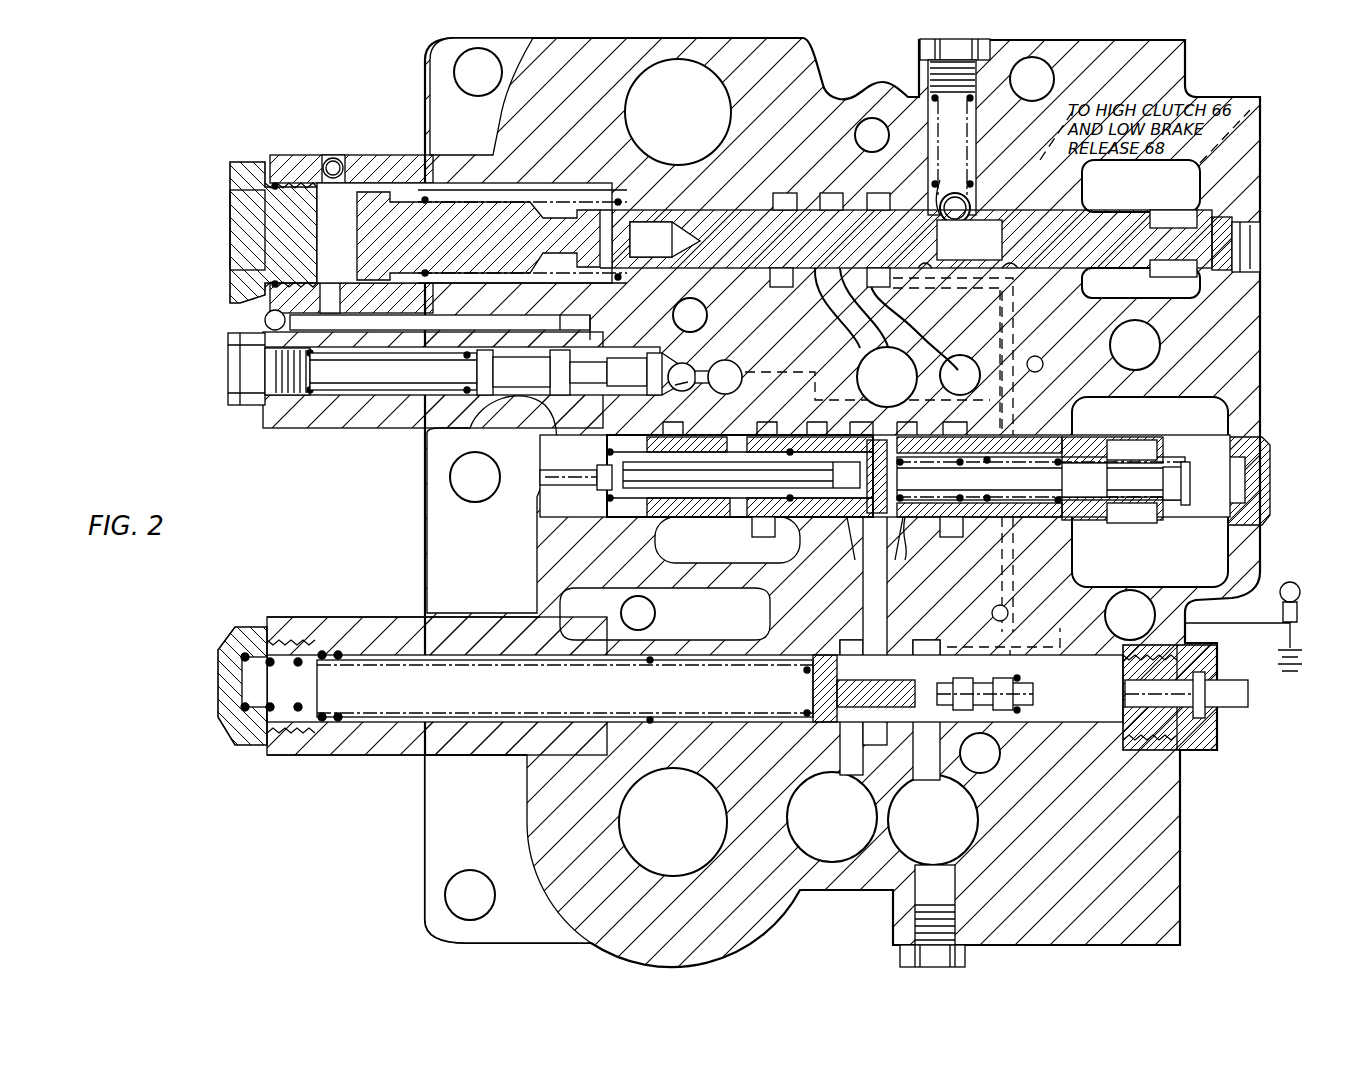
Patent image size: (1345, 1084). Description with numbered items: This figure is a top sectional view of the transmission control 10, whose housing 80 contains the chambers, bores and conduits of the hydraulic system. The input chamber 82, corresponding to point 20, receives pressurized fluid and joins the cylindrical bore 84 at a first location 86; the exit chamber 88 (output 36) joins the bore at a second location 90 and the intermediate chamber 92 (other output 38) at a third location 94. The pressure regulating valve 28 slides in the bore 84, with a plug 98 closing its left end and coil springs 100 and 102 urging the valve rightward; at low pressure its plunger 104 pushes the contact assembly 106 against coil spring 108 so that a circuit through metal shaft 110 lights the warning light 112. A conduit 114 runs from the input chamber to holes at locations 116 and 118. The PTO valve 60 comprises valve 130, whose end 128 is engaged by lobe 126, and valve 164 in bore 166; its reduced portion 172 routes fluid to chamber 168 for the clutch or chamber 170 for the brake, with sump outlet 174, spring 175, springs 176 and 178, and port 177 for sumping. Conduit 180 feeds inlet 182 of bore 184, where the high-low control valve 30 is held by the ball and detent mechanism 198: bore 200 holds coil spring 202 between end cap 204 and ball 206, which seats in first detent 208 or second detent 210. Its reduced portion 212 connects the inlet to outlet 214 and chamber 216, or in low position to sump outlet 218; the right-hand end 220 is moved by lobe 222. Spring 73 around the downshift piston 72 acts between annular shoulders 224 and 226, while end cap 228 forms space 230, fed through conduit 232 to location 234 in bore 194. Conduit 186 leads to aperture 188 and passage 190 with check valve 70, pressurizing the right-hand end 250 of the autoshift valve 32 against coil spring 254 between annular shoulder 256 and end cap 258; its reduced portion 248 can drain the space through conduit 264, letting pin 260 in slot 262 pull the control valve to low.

The transmission control 10 is at (205, 135).
The point 20 is at (900, 862).
The pressure regulating valve 28 is at (745, 727).
The high-low control valve 30 is at (1121, 211).
The autoshift valve 32 is at (390, 402).
The output 36 is at (828, 858).
The other output 38 is at (888, 633).
The PTO valve 60 is at (680, 536).
The check valve 70 is at (690, 390).
The downshift piston 72 is at (455, 215).
The spring 73 is at (630, 205).
The housing 80 is at (305, 617).
The input chamber 82 is at (938, 834).
The cylindrical bore 84 is at (897, 728).
The first location 86 is at (935, 745).
The exit chamber 88 is at (838, 834).
The second location 90 is at (826, 740).
The intermediate chamber 92 is at (838, 596).
The third location 94 is at (857, 660).
The plug 98 is at (218, 685).
The coil spring 100 is at (338, 722).
The coil spring 102 is at (298, 720).
The plunger 104 is at (825, 693).
The contact assembly 106 is at (1000, 720).
The coil spring 108 is at (1120, 712).
The metal shaft 110 is at (1230, 710).
The low hydraulic pressure warning light 112 is at (1290, 582).
The conduit 114 is at (1020, 652).
The location 116 is at (1010, 618).
The location 118 is at (1038, 360).
The lobe 126 is at (1140, 442).
The end 128 is at (1165, 465).
The valve 130 is at (1092, 440).
The valve 164 is at (643, 522).
The bore 166 is at (615, 515).
The chamber 168 is at (738, 592).
The chamber 170 is at (923, 603).
The portion of reduced diameter 172 is at (840, 520).
The sump outlet 174 is at (952, 537).
The spring 175 is at (605, 497).
The spring 176 is at (928, 535).
The port 177 is at (752, 528).
The spring 178 is at (1062, 437).
The conduit 180 is at (992, 325).
The inlet 182 is at (878, 312).
The bore 184 is at (560, 190).
The conduit 186 is at (795, 372).
The aperture 188 is at (712, 372).
The passage 190 is at (658, 360).
The bore 194 is at (492, 504).
The spring-loaded ball and detent mechanism 198 is at (984, 181).
The bore 200 is at (965, 138).
The coil spring 202 is at (975, 112).
The end cap 204 is at (925, 68).
The ball 206 is at (972, 200).
The first detent 208 is at (945, 190).
The second detent 210 is at (975, 212).
The portion of reduced diameter 212 is at (832, 200).
The outlet 214 is at (823, 285).
The chamber 216 is at (880, 391).
The outlet 218 is at (780, 210).
The right-hand end 220 is at (1230, 242).
The lobe 222 is at (1172, 215).
The annular shoulder 224 is at (612, 283).
The annular shoulder 226 is at (430, 170).
The end cap 228 is at (250, 162).
The space 230 is at (310, 244).
The conduit 232 is at (465, 318).
The location 234 is at (590, 318).
The portion of reduced diameter 248 is at (512, 350).
The right-hand end 250 is at (612, 388).
The coil spring 254 is at (328, 395).
The annular shoulder 256 is at (468, 355).
The end cap 258 is at (252, 405).
The pin 260 is at (617, 210).
The slot 262 is at (665, 239).
The conduit 264 is at (545, 455).